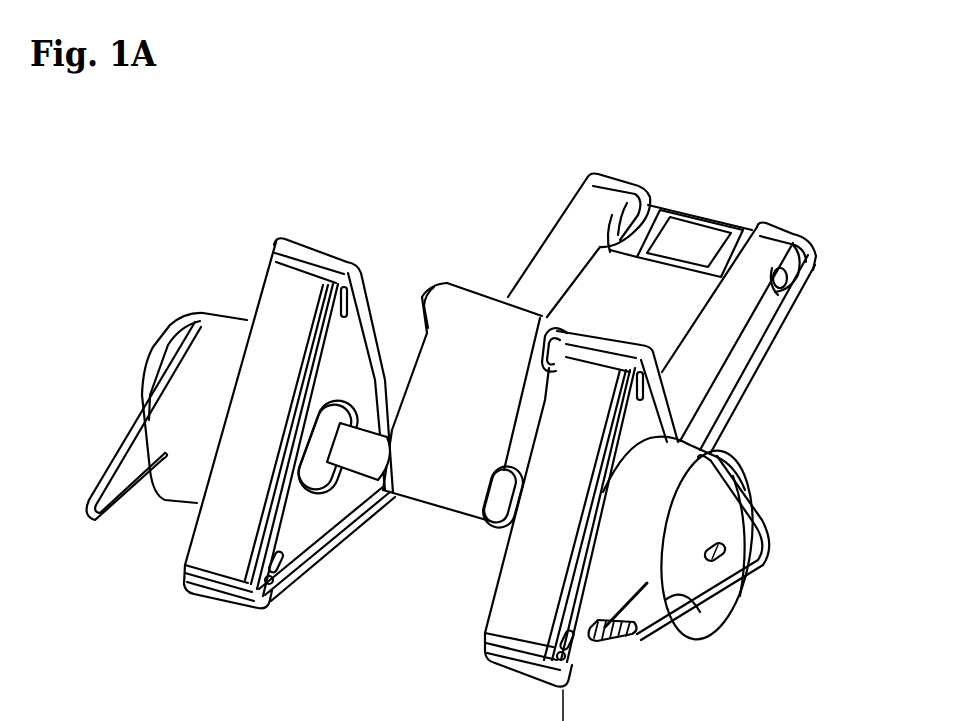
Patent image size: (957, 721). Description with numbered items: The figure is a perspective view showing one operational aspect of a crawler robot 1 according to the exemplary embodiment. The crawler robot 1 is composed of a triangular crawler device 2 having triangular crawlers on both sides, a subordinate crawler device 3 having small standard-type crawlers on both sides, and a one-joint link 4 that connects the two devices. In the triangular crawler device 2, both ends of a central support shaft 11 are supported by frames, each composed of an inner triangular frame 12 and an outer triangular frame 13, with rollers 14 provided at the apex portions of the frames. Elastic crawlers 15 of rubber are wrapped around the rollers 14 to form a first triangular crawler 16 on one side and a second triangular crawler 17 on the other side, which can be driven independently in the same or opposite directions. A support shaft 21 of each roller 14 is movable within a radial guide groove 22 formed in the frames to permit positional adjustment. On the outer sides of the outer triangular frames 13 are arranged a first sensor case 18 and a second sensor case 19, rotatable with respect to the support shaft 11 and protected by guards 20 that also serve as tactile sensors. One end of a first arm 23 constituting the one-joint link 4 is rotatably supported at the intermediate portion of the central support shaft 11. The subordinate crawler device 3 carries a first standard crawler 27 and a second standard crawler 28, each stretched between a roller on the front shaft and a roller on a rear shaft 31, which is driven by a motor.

The crawler robot 1 is at (372, 181).
The triangular crawler device 2 is at (248, 262).
The subordinate crawler device 3 is at (675, 175).
The one-joint link 4 is at (467, 264).
The central support shaft 11 is at (360, 456).
The inner triangular frame 12 is at (345, 350).
The outer triangular frame 13 is at (647, 413).
The roller 14 is at (354, 262).
The elastic crawler 15 is at (208, 548).
The first triangular crawler 16 is at (197, 530).
The second triangular crawler 17 is at (485, 590).
The first sensor case 18 is at (200, 360).
The second sensor case 19 is at (662, 492).
The guard 20 is at (118, 470).
The support shaft 21 is at (275, 586).
The radial guide groove 22 is at (281, 563).
The first arm 23 is at (437, 373).
The first standard crawler 27 is at (610, 175).
The second standard crawler 28 is at (790, 226).
The rear shaft 31 is at (790, 288).